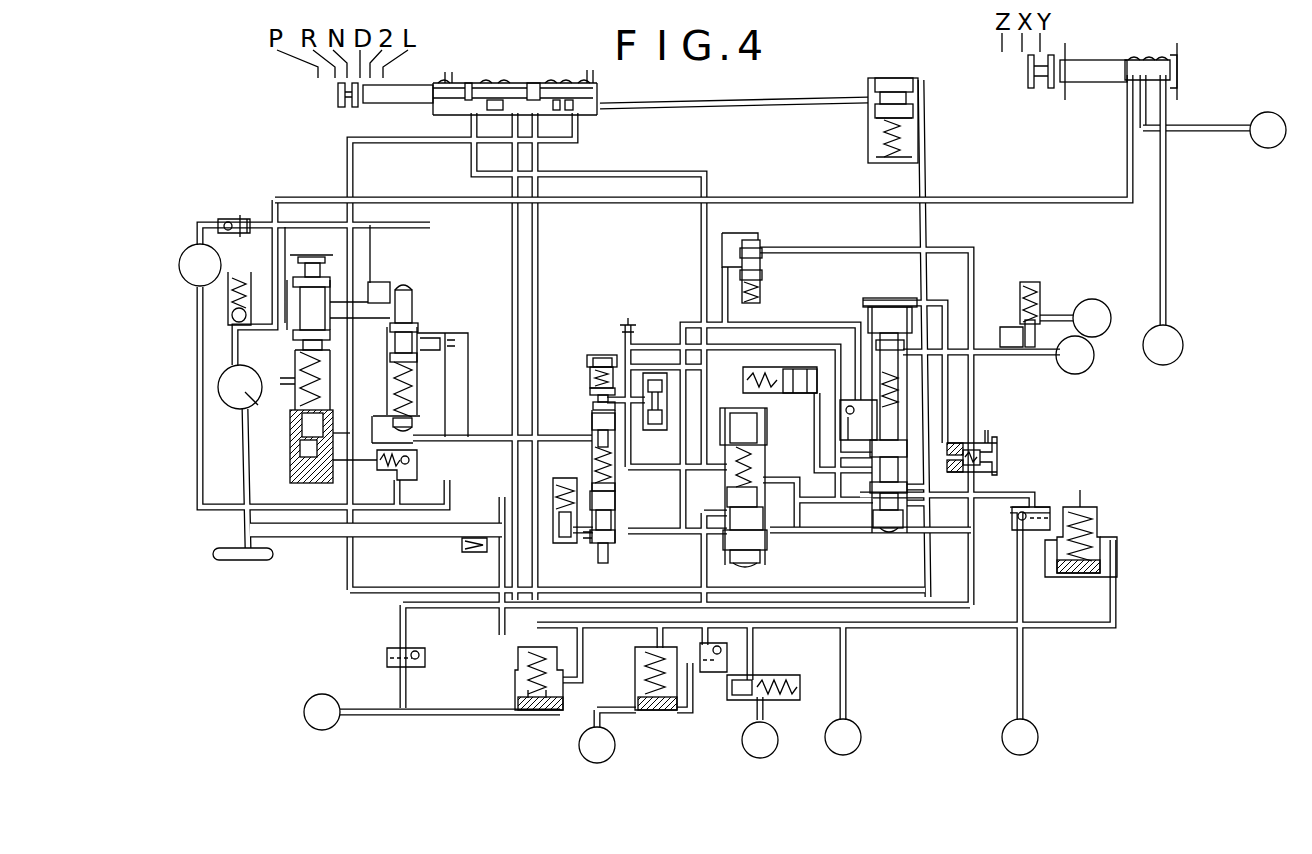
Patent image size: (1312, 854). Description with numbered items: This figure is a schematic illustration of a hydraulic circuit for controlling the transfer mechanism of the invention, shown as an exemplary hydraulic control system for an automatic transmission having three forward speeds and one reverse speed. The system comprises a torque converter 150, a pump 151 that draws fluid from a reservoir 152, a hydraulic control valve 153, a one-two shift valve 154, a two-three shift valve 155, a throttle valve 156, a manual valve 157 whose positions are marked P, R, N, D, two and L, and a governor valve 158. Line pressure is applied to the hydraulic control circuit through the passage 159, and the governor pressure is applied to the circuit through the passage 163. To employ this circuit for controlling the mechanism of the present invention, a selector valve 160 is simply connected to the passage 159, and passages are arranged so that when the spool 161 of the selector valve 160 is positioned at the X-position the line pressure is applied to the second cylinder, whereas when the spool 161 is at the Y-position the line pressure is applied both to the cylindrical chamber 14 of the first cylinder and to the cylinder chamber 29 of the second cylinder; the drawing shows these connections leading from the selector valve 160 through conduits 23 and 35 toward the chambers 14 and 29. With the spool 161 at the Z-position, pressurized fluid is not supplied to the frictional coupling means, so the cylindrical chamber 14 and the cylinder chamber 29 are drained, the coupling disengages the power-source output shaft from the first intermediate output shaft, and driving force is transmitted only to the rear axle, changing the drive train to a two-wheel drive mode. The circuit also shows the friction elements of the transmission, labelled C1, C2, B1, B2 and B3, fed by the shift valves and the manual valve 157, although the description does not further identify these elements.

The cylindrical chamber 14 is at (1178, 345).
The line pressure conduit 23 is at (1168, 178).
The cylinder chamber 29 is at (1272, 122).
The conduit 35 is at (1228, 125).
The torque converter 150 is at (197, 243).
The pump 151 is at (262, 407).
The reservoir 152 is at (256, 562).
The hydraulic control valve 153 is at (336, 253).
The 1-2 shift valve 154 is at (886, 537).
The 2-3 shift valve 155 is at (788, 541).
The throttle valve 156 is at (598, 353).
The manual valve 157 is at (466, 74).
The governor valve 158 is at (1000, 426).
The passage 159 is at (983, 196).
The selector valve 160 is at (1097, 56).
The spool 161 is at (1118, 62).
The passage 163 is at (947, 534).
The first brake B1 is at (861, 740).
The second brake B2 is at (1038, 740).
The third brake B3 is at (1092, 362).
The first clutch C1 is at (333, 722).
The second clutch C2 is at (615, 745).